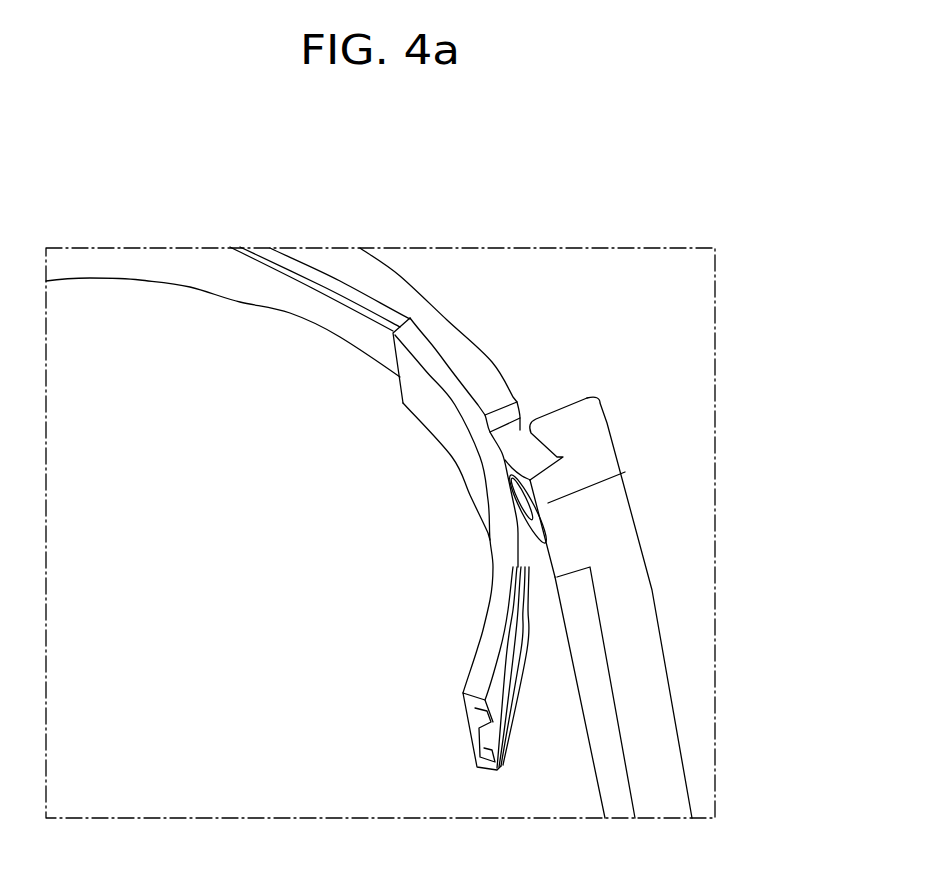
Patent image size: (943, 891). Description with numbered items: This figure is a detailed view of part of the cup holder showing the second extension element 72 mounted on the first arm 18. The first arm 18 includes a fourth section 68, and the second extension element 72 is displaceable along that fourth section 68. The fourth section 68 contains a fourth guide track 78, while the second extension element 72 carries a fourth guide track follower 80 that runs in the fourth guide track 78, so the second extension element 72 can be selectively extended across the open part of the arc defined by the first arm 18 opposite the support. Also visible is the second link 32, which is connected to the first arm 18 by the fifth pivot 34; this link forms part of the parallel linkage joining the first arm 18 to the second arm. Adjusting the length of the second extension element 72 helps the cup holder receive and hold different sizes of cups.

The first arm 18 is at (402, 293).
The second link 32 is at (653, 685).
The fifth pivot 34 is at (540, 394).
The fourth section 68 is at (306, 308).
The second extension element 72 is at (462, 453).
The fourth guide track 78 is at (316, 270).
The fourth guide track follower 80 is at (490, 730).